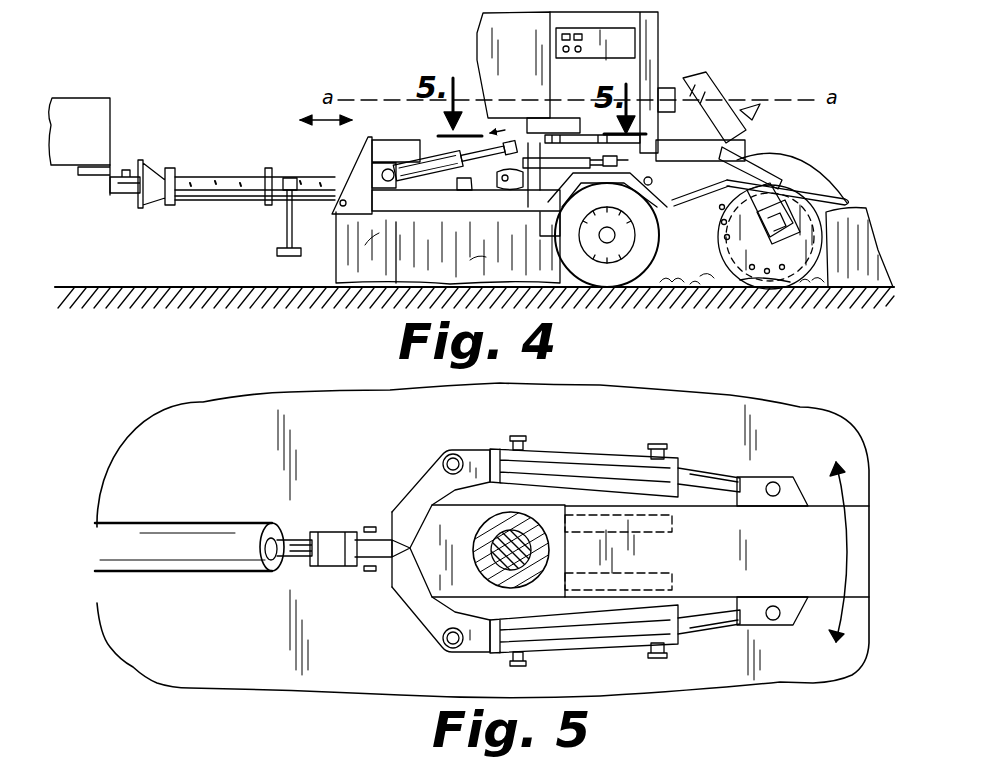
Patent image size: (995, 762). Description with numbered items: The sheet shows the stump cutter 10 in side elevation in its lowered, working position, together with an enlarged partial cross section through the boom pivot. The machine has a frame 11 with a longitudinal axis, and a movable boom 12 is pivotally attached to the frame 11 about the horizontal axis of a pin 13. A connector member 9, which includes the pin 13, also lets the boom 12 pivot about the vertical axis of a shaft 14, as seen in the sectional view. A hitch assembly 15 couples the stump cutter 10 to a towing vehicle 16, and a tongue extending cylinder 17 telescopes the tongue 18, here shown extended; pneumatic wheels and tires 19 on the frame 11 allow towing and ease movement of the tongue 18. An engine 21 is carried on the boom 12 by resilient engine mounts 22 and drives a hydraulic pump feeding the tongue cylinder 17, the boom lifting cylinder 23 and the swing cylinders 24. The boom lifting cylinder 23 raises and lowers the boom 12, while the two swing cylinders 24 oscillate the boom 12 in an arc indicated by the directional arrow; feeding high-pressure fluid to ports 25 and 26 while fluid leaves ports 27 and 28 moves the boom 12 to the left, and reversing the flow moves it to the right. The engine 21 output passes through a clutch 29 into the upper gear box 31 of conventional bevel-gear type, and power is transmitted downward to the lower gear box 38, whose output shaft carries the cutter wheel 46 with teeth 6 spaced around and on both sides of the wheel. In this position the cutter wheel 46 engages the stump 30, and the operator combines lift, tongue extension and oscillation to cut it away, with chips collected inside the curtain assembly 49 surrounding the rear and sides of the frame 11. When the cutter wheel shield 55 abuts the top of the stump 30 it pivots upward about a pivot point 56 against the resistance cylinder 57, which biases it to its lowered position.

In FIG. 4, the teeth 6 is at (722, 240).
In FIG. 4, the connector member 9 is at (520, 208).
In FIG. 5, the connector member 9 is at (440, 583).
In FIG. 4, the stump cutter 10 is at (778, 50).
In FIG. 4, the frame 11 is at (418, 241).
In FIG. 5, the frame 11 is at (803, 431).
In FIG. 4, the boom 12 is at (712, 152).
In FIG. 5, the boom 12 is at (790, 563).
In FIG. 4, the pin 13 is at (542, 216).
In FIG. 5, the shaft 14 is at (492, 541).
In FIG. 4, the hitch assembly 15 is at (126, 160).
In FIG. 4, the towing vehicle 16 is at (90, 138).
In FIG. 4, the tongue extending cylinder 17 is at (277, 205).
In FIG. 4, the tongue 18 is at (230, 182).
In FIG. 4, the pneumatic wheels and tires 19 is at (627, 288).
In FIG. 4, the engine 21 is at (603, 79).
In FIG. 4, the resilient engine mounts 22 is at (560, 133).
In FIG. 4, the boom lifting cylinder 23 is at (430, 172).
In FIG. 5, the boom lifting cylinder 23 is at (188, 528).
In FIG. 4, the swing cylinders 24 is at (582, 185).
In FIG. 5, the swing cylinders 24 is at (590, 466).
In FIG. 5, the port 25 is at (512, 662).
In FIG. 5, the port 26 is at (663, 444).
In FIG. 5, the port 27 is at (521, 437).
In FIG. 5, the port 28 is at (661, 657).
In FIG. 4, the clutch 29 is at (664, 82).
In FIG. 4, the stump 30 is at (867, 222).
In FIG. 4, the gear box 31 is at (706, 90).
In FIG. 4, the lower gear box 38 is at (790, 202).
In FIG. 4, the cutter wheel 46 is at (802, 266).
In FIG. 4, the curtain assembly 49 is at (442, 262).
In FIG. 4, the cutter wheel shield 55 is at (800, 190).
In FIG. 4, the pivot point 56 is at (714, 200).
In FIG. 4, the resistance cylinder 57 is at (752, 168).